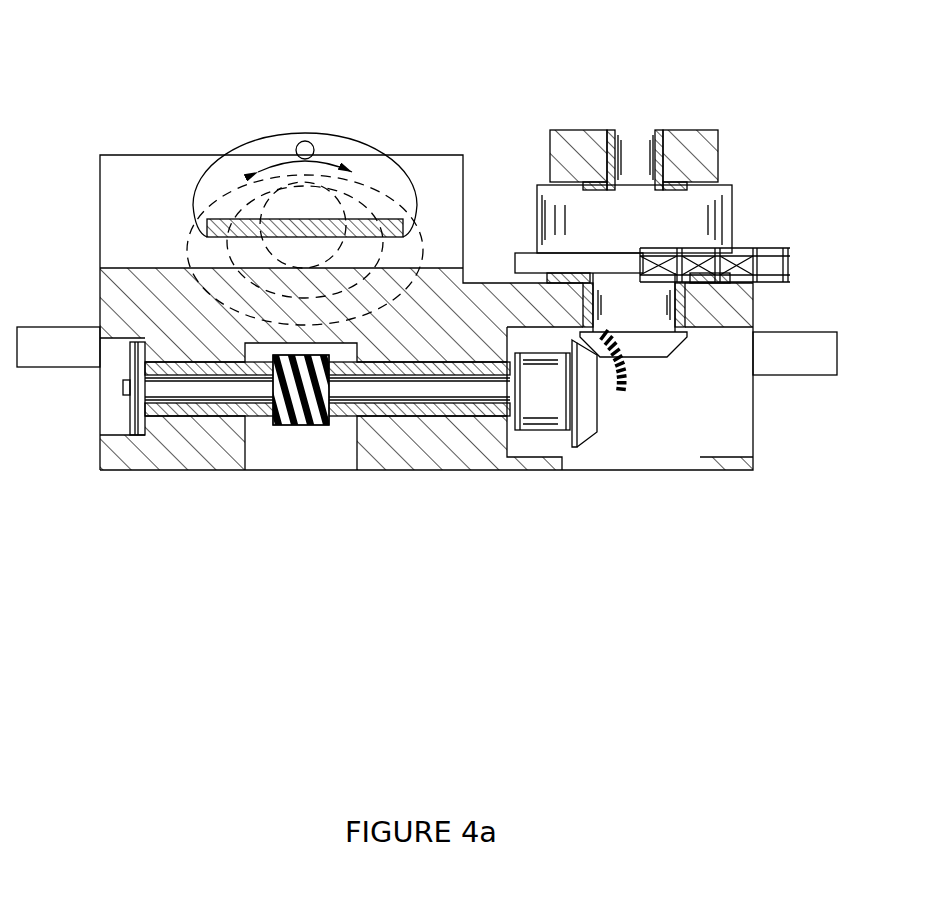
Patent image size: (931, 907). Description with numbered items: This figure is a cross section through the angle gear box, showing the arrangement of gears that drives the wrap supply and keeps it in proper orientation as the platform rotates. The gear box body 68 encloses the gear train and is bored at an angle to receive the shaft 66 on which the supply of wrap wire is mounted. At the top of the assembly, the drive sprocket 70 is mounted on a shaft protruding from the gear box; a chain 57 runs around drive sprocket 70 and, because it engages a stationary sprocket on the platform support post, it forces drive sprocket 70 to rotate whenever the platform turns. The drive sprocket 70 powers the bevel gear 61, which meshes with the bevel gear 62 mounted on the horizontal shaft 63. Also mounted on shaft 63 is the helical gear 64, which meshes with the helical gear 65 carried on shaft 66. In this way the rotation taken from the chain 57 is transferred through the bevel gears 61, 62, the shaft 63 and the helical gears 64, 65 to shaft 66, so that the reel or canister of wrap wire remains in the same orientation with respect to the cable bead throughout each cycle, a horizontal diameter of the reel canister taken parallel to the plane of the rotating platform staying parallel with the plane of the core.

The gear box body 68 is at (188, 472).
The shaft 66 is at (302, 133).
The drive sprocket 70 is at (524, 250).
The chain 57 is at (776, 246).
The helical gear 64 is at (304, 428).
The helical gear 65 is at (350, 338).
The shaft 63 is at (435, 395).
The bevel gear 62 is at (585, 449).
The bevel gear 61 is at (650, 360).